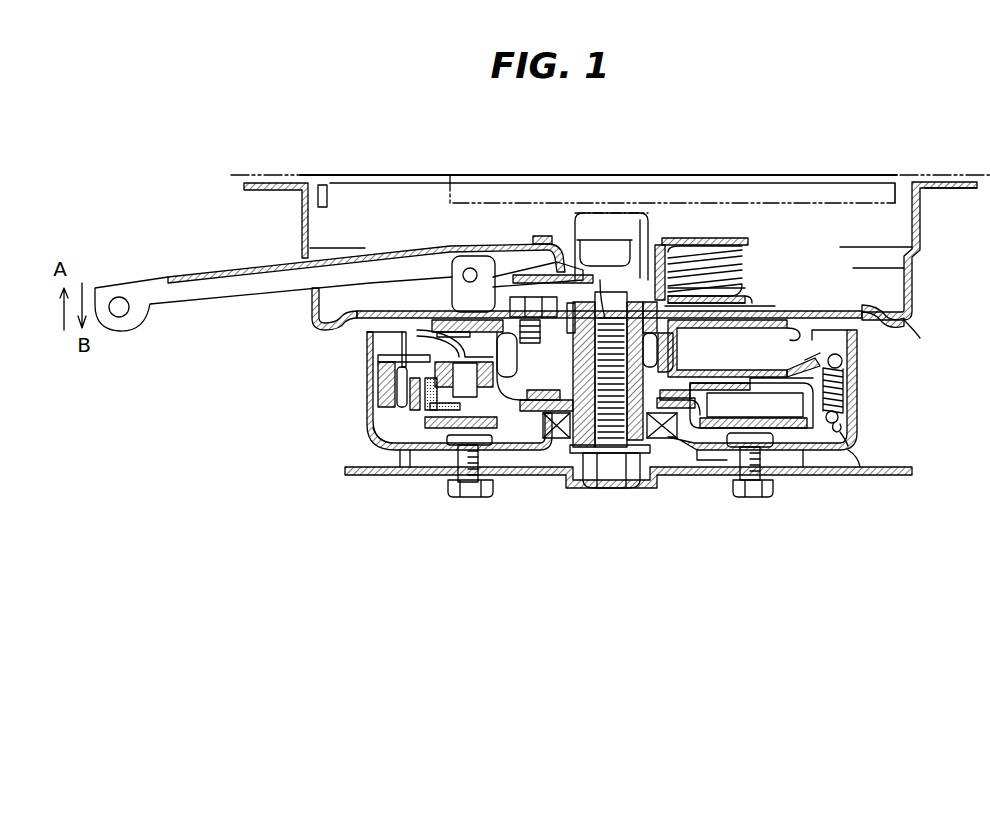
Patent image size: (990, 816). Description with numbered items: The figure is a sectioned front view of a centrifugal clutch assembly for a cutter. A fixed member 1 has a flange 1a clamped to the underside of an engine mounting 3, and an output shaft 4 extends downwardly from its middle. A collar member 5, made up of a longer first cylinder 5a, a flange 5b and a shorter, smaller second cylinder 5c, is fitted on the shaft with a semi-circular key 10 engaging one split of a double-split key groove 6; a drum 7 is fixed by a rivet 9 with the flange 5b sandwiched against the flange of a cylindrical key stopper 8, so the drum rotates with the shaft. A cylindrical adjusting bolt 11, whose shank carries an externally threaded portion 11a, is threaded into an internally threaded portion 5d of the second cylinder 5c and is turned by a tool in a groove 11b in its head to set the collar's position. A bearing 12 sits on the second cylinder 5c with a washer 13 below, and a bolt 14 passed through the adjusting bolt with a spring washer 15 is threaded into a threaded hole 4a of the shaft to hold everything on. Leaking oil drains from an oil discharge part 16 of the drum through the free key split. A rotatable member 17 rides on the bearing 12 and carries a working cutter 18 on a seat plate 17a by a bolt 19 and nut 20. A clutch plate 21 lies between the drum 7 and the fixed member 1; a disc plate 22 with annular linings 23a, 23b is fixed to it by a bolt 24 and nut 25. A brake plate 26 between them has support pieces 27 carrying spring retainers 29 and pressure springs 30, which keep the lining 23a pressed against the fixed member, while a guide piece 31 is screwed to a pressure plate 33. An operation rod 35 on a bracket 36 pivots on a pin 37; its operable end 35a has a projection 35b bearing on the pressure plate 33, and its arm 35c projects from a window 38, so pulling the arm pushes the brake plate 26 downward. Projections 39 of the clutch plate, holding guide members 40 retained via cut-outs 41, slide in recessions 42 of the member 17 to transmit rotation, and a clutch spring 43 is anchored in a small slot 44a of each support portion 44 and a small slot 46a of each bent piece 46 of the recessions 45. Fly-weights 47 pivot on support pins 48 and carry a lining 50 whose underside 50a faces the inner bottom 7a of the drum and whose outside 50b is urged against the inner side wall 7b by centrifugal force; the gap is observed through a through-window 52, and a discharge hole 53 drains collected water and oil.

The fixed member 1 is at (938, 270).
The flange 1a is at (960, 192).
The engine mounting 3 is at (904, 196).
The output shaft 4 is at (700, 246).
The threaded hole 4a is at (648, 292).
The collar member 5 is at (745, 292).
The first cylinder 5a is at (545, 238).
The flange 5b is at (751, 405).
The second cylinder 5c is at (700, 462).
The internally threaded portion 5d is at (650, 444).
The key groove 6 is at (728, 306).
The drum 7 is at (760, 425).
The inner bottom 7a is at (465, 408).
The inner side wall 7b is at (385, 382).
The key stopper 8 is at (658, 348).
The rivet 9 is at (540, 445).
The semi-circular key 10 is at (685, 352).
The adjusting bolt 11 is at (612, 490).
The externally threaded portion 11a is at (665, 430).
The groove 11b is at (577, 440).
The bearing 12 is at (560, 428).
The washer 13 is at (655, 430).
The bolt 14 is at (600, 486).
The spring washer 15 is at (628, 455).
The oil discharge part 16 is at (500, 455).
The rotatable member 17 is at (876, 400).
The seat plate 17a is at (452, 478).
The working cutter 18 is at (842, 478).
The bolt 19 is at (760, 495).
The nut 20 is at (748, 482).
The clutch plate 21 is at (781, 395).
The disc plate 22 is at (470, 308).
The annular lining 23a is at (775, 310).
The annular lining 23b is at (744, 348).
The bolt 24 is at (535, 343).
The nut 25 is at (520, 275).
The brake plate 26 is at (395, 333).
The support pieces 27 is at (745, 278).
The spring retainer 29 is at (480, 243).
The pressure spring 30 is at (745, 262).
The guide piece 31 is at (590, 285).
The pressure plate 33 is at (562, 290).
The operation rod 35 is at (377, 232).
The operable end 35a is at (605, 245).
The projection 35b is at (632, 270).
The arm 35c is at (140, 320).
The bracket 36 is at (458, 270).
The pin 37 is at (470, 270).
The window 38 is at (305, 305).
The projections 39 is at (397, 402).
The guide members 40 is at (410, 415).
The cut-outs 41 is at (425, 422).
The recessions 42 is at (378, 394).
The clutch spring 43 is at (850, 382).
The support portions 44 is at (815, 358).
The small slot 44a is at (866, 309).
The recessions 45 is at (852, 430).
The bent pieces 46 is at (856, 408).
The small slot 46a is at (860, 478).
The fly-weights 47 is at (490, 372).
The support pin 48 is at (410, 345).
The lining 50 is at (425, 450).
The underside 50a is at (432, 468).
The outside 50b is at (405, 440).
The through-window 52 is at (802, 475).
The discharge hole 53 is at (898, 326).